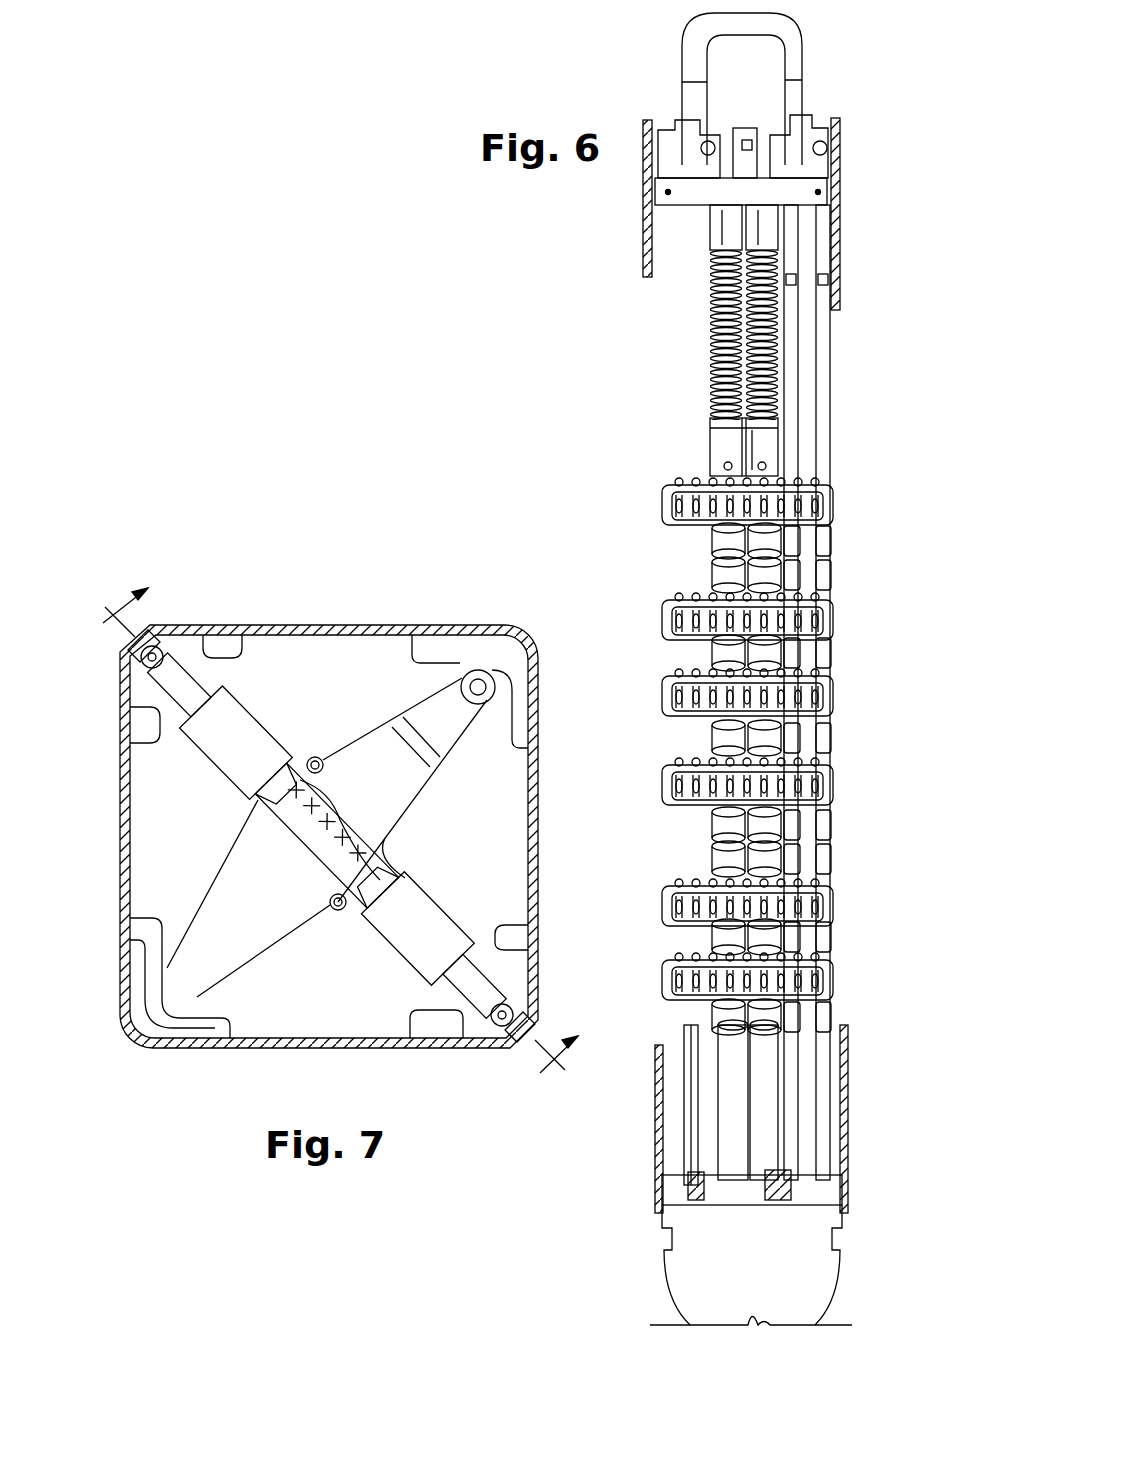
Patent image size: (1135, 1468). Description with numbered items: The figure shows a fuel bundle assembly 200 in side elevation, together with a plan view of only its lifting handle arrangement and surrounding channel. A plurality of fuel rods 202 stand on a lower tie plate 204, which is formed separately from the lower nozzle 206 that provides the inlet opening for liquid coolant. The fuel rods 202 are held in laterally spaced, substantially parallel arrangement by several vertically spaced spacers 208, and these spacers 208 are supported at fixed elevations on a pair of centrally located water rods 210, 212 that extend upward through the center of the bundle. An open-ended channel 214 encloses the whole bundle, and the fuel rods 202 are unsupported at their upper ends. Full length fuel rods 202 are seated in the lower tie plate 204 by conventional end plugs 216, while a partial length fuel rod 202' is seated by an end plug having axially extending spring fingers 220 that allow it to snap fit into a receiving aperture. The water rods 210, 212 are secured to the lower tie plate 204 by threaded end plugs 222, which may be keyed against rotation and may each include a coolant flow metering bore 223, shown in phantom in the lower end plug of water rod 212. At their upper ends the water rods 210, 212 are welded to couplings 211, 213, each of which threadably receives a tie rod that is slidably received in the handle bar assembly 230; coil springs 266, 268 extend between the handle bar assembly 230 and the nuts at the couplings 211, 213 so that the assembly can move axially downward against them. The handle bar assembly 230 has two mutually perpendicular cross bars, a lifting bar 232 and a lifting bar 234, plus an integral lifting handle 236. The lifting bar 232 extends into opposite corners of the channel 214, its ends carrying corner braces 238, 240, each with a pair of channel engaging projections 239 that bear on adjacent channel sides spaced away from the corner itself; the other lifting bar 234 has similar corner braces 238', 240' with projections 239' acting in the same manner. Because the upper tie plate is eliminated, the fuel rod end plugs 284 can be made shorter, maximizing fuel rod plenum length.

In FIG. 6, the fuel bundle assembly 200 is at (610, 425).
In FIG. 6, the fuel rods 202 is at (838, 692).
In FIG. 6, the partial length fuel rod 202' is at (630, 1105).
In FIG. 6, the lower tie plate 204 is at (850, 1180).
In FIG. 6, the lower nozzle 206 is at (825, 1278).
In FIG. 6, the spacers 208 is at (805, 992).
In FIG. 6, the water rod 210 is at (722, 557).
In FIG. 6, the coupling 211 is at (722, 442).
In FIG. 6, the water rod 212 is at (765, 560).
In FIG. 6, the coupling 213 is at (770, 446).
In FIG. 6, the channel 214 is at (838, 240).
In FIG. 7, the channel 214 is at (330, 628).
In FIG. 6, the end plugs 216 is at (832, 1152).
In FIG. 6, the spring fingers 220 is at (695, 1198).
In FIG. 6, the threaded end plugs 222 is at (730, 1165).
In FIG. 6, the coolant flow metering bore 223 is at (776, 1190).
In FIG. 6, the handle bar assembly 230 is at (830, 98).
In FIG. 7, the handle bar assembly 230 is at (342, 716).
In FIG. 7, the lifting bar 232 is at (412, 772).
In FIG. 7, the lifting bar 234 is at (215, 776).
In FIG. 6, the lifting handle 236 is at (768, 25).
In FIG. 7, the lifting handle 236 is at (372, 912).
In FIG. 7, the corner brace 238 is at (409, 715).
In FIG. 7, the corner brace 238' is at (165, 788).
In FIG. 7, the channel engaging projections 239 is at (332, 832).
In FIG. 7, the channel engaging projections 239' is at (400, 832).
In FIG. 7, the corner brace 240 is at (278, 999).
In FIG. 7, the corner brace 240' is at (505, 880).
In FIG. 6, the coil spring 266 is at (770, 333).
In FIG. 6, the coil spring 268 is at (720, 372).
In FIG. 6, the fuel rod end plug 284 is at (793, 274).